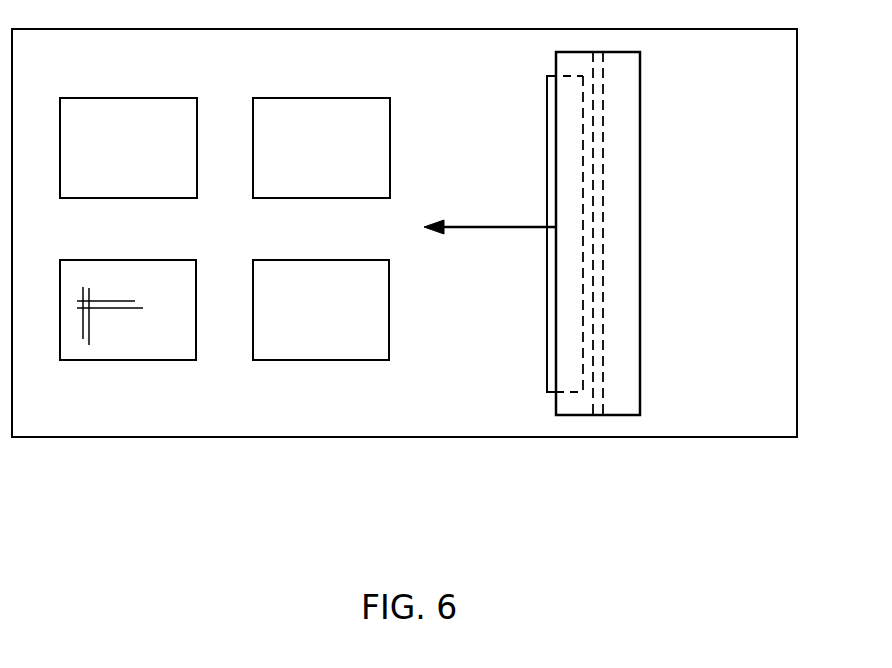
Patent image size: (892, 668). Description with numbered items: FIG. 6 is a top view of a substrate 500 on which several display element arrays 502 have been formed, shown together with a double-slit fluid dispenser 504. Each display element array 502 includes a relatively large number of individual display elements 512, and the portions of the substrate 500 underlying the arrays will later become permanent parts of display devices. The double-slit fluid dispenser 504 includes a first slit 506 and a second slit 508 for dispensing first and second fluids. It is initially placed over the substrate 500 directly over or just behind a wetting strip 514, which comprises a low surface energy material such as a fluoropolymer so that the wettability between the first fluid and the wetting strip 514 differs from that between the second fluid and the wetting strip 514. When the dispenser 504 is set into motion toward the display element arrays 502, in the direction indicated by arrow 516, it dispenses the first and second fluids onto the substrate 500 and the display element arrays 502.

The substrate 500 is at (768, 396).
The display element arrays 502 is at (144, 159).
The double-slit fluid dispenser 504 is at (641, 101).
The first slit 506 is at (590, 407).
The second slit 508 is at (603, 393).
The individual display elements 512 is at (78, 304).
The wetting strip 514 is at (546, 123).
The arrow 516 is at (495, 225).